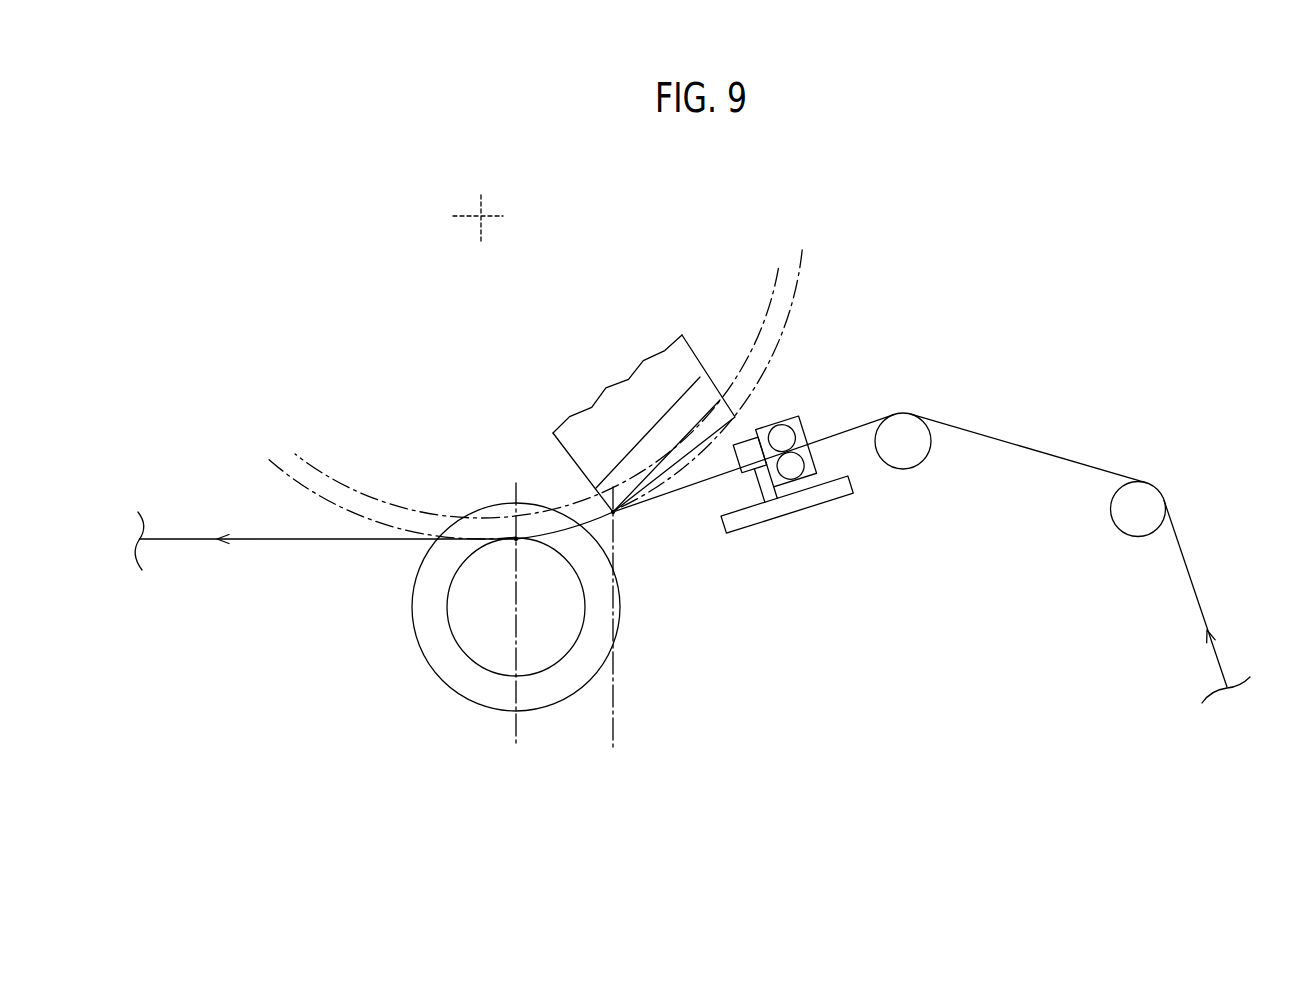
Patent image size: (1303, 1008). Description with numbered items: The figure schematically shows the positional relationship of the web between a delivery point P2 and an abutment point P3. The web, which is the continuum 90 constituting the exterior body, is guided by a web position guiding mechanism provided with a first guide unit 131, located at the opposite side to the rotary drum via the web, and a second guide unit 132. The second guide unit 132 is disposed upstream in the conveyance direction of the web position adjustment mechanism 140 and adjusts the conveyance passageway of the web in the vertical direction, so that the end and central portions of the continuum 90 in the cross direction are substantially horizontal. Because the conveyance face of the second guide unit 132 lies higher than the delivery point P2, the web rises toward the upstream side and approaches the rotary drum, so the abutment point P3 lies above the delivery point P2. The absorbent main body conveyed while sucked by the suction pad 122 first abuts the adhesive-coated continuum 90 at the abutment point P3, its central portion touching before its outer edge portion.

The continuum 90 is at (1183, 552).
The suction pad 122 is at (690, 353).
The first guide unit 131 is at (548, 712).
The second guide unit 132 is at (907, 470).
The web position adjustment mechanism 140 is at (800, 537).
The delivery point P2 is at (512, 549).
The abutment point P3 is at (615, 515).